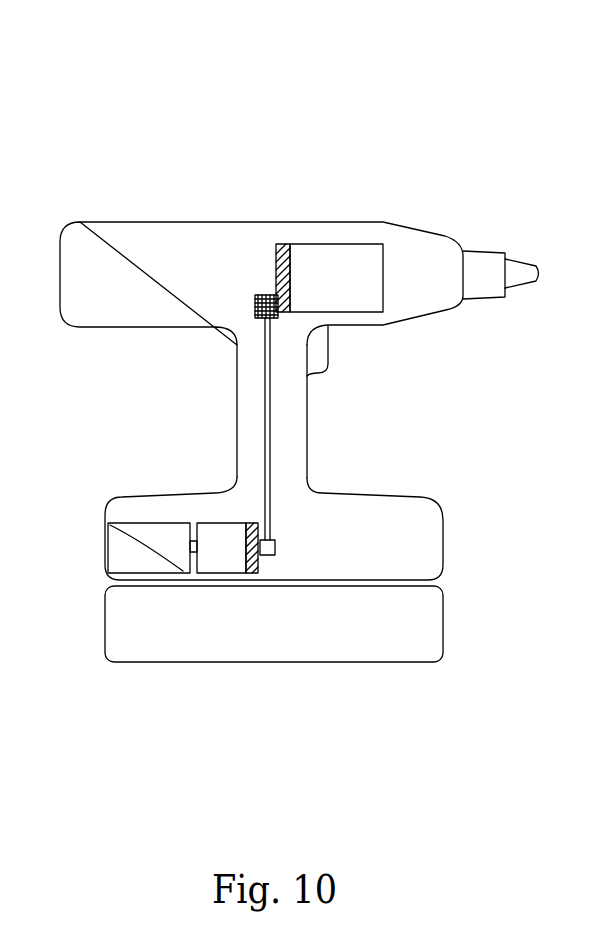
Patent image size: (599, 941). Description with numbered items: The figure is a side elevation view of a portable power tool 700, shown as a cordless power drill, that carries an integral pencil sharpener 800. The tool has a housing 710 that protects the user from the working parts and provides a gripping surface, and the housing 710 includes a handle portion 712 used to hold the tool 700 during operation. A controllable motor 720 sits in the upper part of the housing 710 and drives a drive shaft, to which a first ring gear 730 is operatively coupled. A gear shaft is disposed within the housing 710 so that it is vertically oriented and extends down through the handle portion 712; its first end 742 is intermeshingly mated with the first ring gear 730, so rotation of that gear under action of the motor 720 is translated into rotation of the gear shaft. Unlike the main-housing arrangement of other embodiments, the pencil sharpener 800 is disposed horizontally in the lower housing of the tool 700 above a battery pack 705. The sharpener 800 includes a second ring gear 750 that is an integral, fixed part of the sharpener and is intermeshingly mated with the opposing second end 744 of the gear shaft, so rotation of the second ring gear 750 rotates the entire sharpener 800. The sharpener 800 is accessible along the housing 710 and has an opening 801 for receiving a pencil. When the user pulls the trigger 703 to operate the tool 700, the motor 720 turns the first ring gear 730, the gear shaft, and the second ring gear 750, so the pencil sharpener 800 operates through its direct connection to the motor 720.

The portable power tool 700 is at (488, 105).
The trigger 703 is at (331, 350).
The battery pack 705 is at (298, 640).
The housing 710 is at (112, 222).
The handle portion 712 is at (307, 418).
The motor 720 is at (353, 244).
The first ring gear 730 is at (282, 246).
The first end 742 is at (257, 296).
The second end 744 is at (276, 548).
The second ring gear 750 is at (258, 565).
The integral pencil sharpener 800 is at (160, 523).
The opening 801 is at (105, 553).